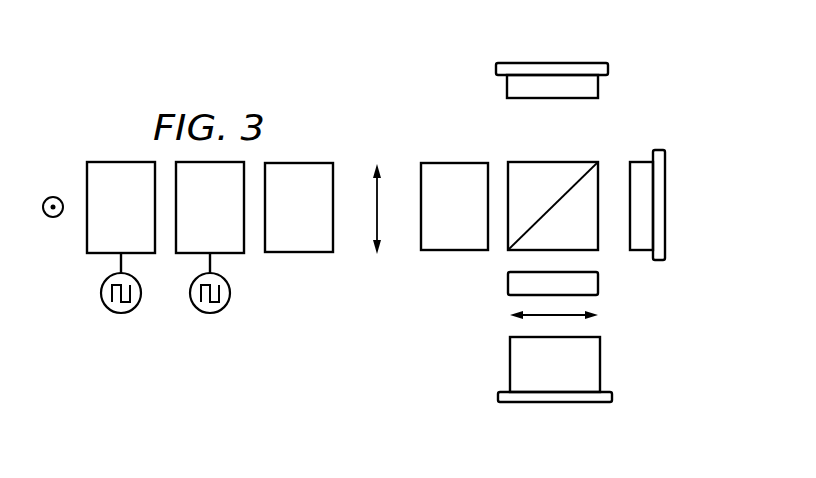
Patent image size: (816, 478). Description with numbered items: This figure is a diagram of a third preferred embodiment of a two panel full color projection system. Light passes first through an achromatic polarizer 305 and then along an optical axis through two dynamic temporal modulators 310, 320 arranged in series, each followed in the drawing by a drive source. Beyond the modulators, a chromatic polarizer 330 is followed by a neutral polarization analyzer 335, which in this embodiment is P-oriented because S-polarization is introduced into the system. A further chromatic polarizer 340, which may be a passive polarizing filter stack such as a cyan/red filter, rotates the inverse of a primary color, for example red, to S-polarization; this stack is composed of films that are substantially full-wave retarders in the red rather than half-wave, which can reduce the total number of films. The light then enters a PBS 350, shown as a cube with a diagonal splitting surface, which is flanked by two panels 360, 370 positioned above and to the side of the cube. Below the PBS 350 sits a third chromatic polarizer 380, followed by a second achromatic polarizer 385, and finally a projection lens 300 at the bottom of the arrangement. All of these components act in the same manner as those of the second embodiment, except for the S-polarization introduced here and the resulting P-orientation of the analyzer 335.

The projection lens 300 is at (555, 402).
The achromatic polarizer 305 is at (53, 218).
The dynamic temporal modulator 310 is at (99, 222).
The dynamic temporal modulator 320 is at (188, 222).
The chromatic polarizer 330 is at (277, 220).
The neutral polarization analyzer 335 is at (378, 222).
The chromatic polarizer 340 is at (432, 220).
The PBS 350 is at (553, 161).
The panel 360 is at (553, 62).
The panel 370 is at (666, 177).
The chromatic polarizer 380 is at (598, 282).
The achromatic polarizer 385 is at (583, 318).